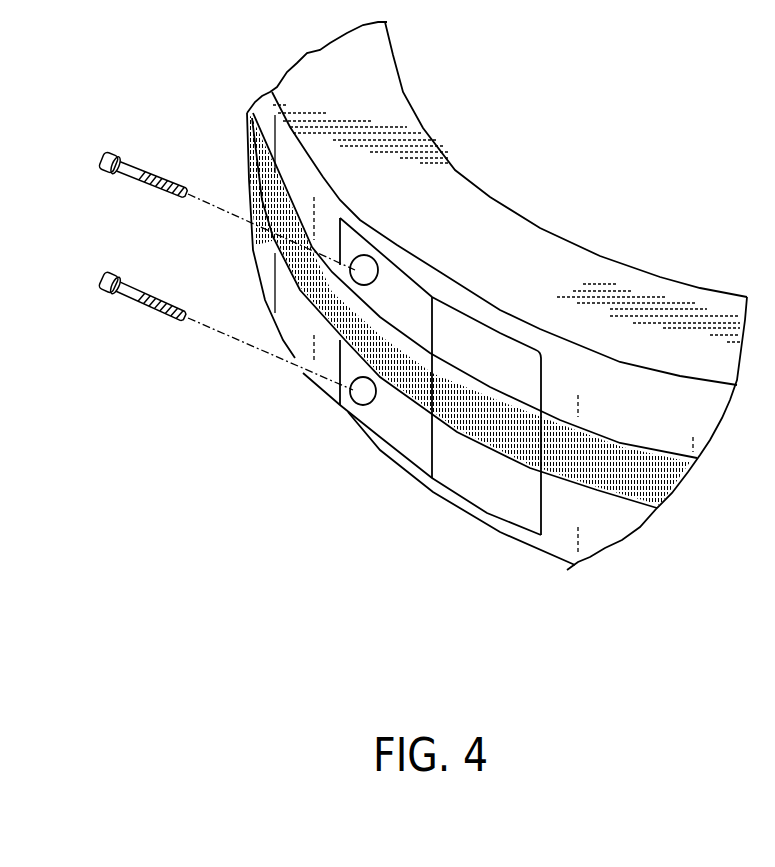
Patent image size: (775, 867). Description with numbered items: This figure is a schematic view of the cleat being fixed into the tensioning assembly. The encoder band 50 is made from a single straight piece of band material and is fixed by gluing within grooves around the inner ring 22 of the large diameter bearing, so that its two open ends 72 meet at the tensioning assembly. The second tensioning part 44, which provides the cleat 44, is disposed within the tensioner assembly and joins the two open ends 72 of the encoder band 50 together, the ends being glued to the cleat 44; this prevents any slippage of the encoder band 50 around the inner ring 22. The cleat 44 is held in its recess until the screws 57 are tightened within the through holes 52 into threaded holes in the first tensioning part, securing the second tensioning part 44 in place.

The inner ring 22 is at (380, 157).
The second tensioning part 44 is at (493, 468).
The encoder band 50 is at (490, 407).
The through holes 52 is at (373, 263).
The screws 57 is at (133, 162).
The open ends 72 is at (452, 378).